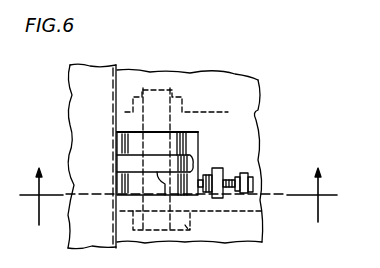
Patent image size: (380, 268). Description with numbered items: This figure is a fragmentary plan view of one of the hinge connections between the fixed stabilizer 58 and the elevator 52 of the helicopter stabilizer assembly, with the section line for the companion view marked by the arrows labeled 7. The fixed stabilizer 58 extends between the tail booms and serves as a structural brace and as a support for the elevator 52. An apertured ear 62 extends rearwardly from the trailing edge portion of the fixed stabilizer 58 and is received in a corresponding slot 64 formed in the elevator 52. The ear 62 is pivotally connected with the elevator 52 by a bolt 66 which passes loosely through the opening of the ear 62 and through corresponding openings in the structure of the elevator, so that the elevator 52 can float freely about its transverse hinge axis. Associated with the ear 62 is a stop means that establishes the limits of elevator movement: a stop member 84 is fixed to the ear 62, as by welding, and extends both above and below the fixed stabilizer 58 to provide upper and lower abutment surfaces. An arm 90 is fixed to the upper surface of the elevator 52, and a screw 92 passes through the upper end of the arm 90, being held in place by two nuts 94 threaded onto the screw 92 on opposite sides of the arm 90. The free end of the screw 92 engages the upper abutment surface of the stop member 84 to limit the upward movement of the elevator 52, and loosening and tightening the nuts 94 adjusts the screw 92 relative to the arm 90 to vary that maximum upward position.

The section line 7- 7 is at (178, 187).
The elevator 52 is at (235, 82).
The fixed stabilizer 58 is at (98, 72).
The apertured ear 62 is at (193, 162).
The slot 64 is at (201, 145).
The bolt 66 is at (190, 227).
The stop member 84 is at (128, 190).
The arm 90 is at (218, 200).
The screw 92 is at (255, 178).
The nut 94 is at (250, 173).